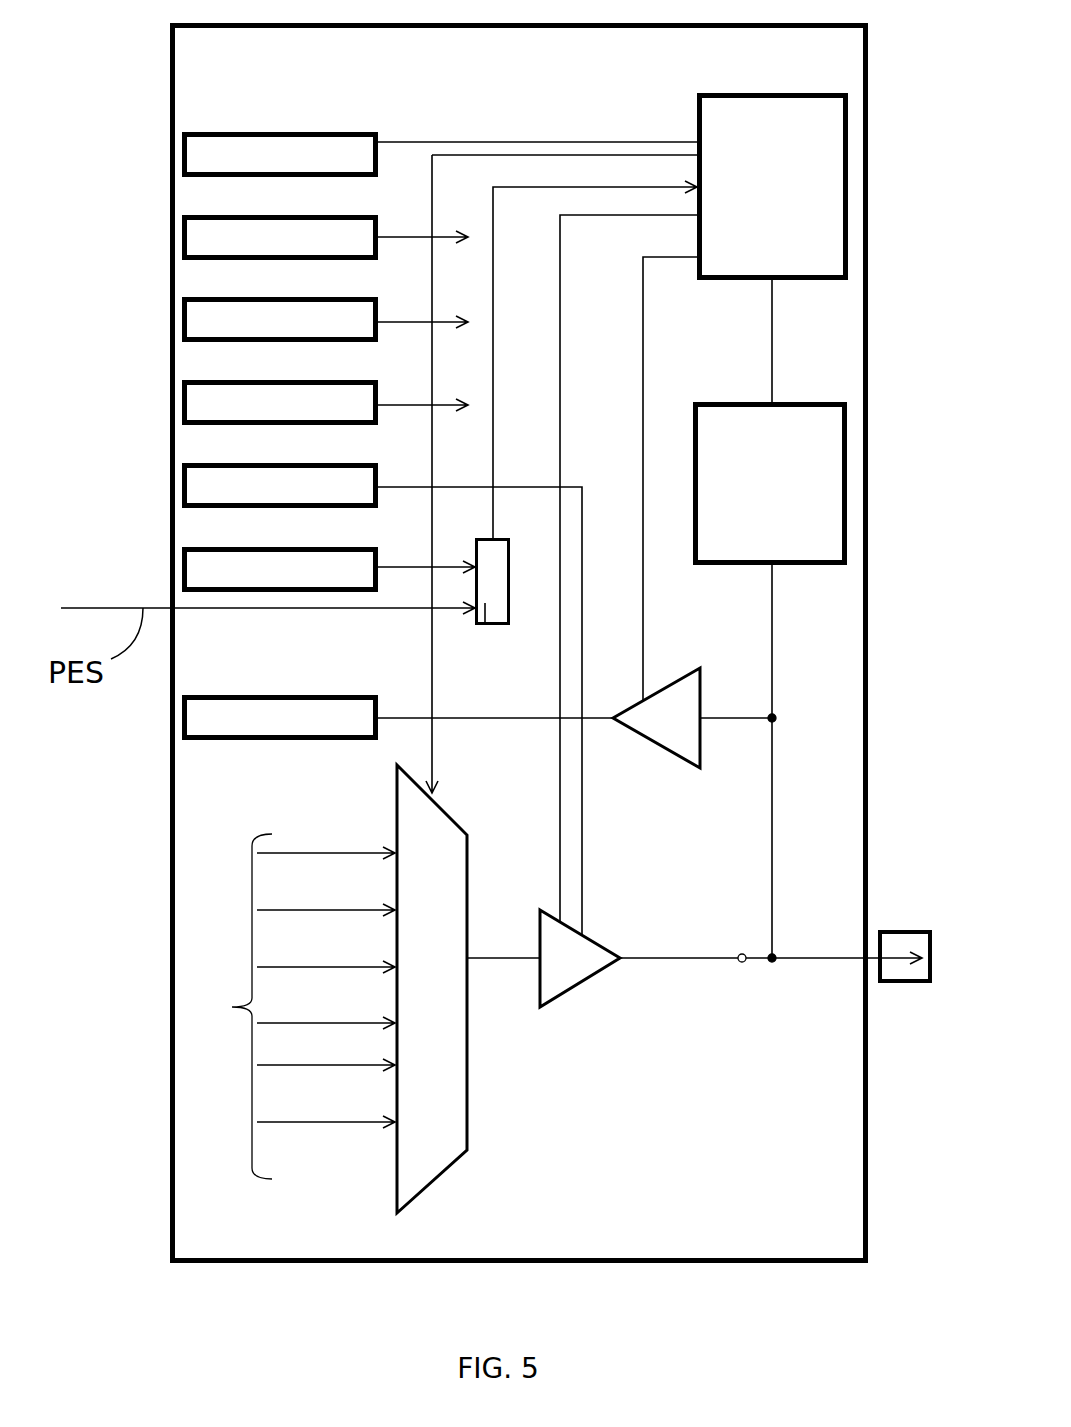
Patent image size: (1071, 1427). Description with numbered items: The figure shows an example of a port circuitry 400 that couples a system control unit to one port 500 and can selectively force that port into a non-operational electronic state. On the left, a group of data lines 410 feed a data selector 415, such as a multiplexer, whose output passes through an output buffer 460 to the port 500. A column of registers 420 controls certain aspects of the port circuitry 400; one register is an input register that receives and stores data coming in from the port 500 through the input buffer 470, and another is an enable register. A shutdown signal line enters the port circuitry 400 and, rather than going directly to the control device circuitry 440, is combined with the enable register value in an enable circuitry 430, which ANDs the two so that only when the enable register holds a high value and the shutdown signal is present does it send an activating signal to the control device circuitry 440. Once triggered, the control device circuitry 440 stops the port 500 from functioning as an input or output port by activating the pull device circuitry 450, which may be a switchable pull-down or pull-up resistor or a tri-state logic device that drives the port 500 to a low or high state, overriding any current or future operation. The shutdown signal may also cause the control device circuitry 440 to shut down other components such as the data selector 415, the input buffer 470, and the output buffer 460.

The port circuitry 400 is at (519, 643).
The data lines 410 is at (230, 1007).
The data selector 415 is at (468, 684).
The registers 420 is at (200, 760).
The enable circuitry 430 is at (485, 625).
The control device circuitry 440 is at (773, 249).
The pull device circuitry 450 is at (770, 684).
The output buffer 460 is at (731, 958).
The input buffer 470 is at (692, 718).
The port 500 is at (915, 940).